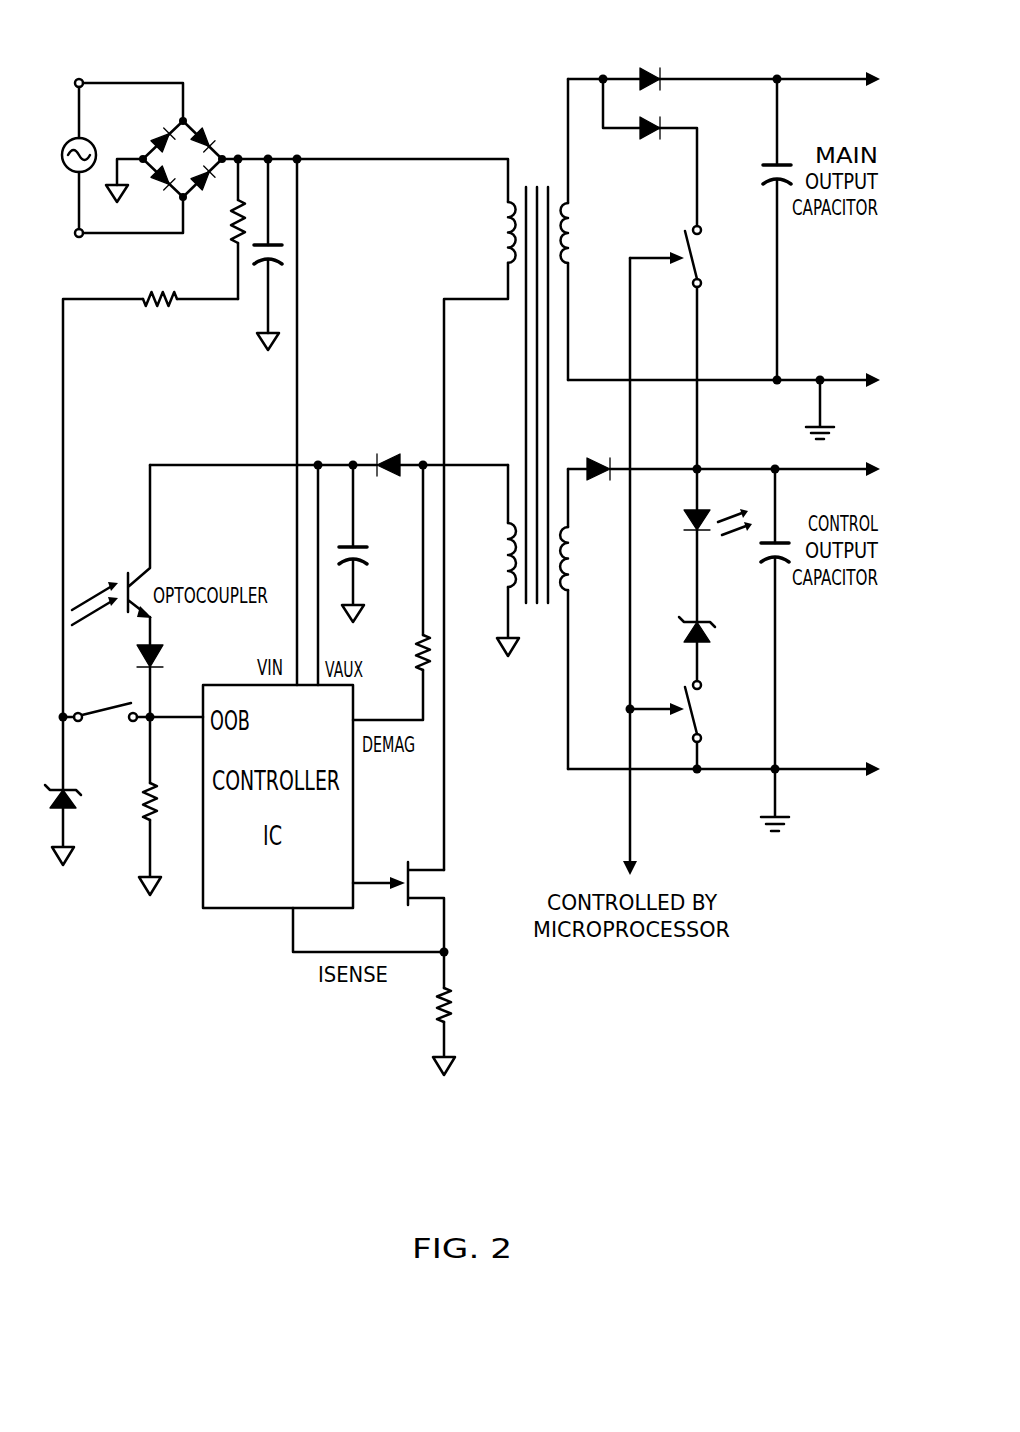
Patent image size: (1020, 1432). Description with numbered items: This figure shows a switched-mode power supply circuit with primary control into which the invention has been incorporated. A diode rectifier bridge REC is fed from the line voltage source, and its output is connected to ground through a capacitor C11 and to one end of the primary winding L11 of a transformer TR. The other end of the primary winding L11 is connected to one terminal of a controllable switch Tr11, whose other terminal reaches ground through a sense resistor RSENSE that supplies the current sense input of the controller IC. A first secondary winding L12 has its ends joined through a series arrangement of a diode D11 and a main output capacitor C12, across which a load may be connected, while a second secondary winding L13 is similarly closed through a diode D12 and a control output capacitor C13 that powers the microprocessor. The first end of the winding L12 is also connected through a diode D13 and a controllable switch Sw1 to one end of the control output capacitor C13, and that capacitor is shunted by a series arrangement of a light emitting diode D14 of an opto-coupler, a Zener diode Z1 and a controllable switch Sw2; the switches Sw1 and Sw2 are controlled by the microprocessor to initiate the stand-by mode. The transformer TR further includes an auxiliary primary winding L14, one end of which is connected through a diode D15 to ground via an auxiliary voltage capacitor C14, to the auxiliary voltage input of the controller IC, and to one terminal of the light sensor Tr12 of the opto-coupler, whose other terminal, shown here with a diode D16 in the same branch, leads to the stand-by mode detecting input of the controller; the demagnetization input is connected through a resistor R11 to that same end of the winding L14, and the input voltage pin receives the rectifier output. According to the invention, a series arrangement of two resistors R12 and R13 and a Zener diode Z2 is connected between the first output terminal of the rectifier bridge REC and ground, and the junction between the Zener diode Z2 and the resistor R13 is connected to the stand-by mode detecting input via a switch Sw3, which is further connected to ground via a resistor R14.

The diode rectifier bridge REC is at (204, 140).
The resistor R12 is at (233, 214).
The resistor R13 is at (157, 294).
The capacitor C11 is at (255, 262).
The transformer TR is at (537, 474).
The primary winding L11 is at (503, 233).
The first secondary winding L12 is at (575, 223).
The second secondary winding L13 is at (573, 565).
The auxiliary primary winding L14 is at (507, 575).
The diode D11 is at (650, 66).
The diode D12 is at (591, 455).
The diode D13 is at (646, 142).
The light emitting diode D14 is at (688, 520).
The diode D15 is at (393, 455).
The diode D16 is at (143, 658).
The main output capacitor C12 is at (768, 170).
The control output capacitor C13 is at (760, 552).
The VAUX capacitor C14 is at (392, 603).
The controllable switch Sw1 is at (686, 347).
The controllable switch Sw2 is at (682, 725).
The switch Sw3 is at (131, 729).
The Zener diode Z1 is at (688, 630).
The Zener diode Z2 is at (72, 803).
The controllable switch Tr11 is at (430, 888).
The light sensor Tr12 is at (126, 584).
The resistor R11 is at (417, 655).
The resistor R14 is at (158, 800).
The sense resistor RSENSE is at (485, 1013).